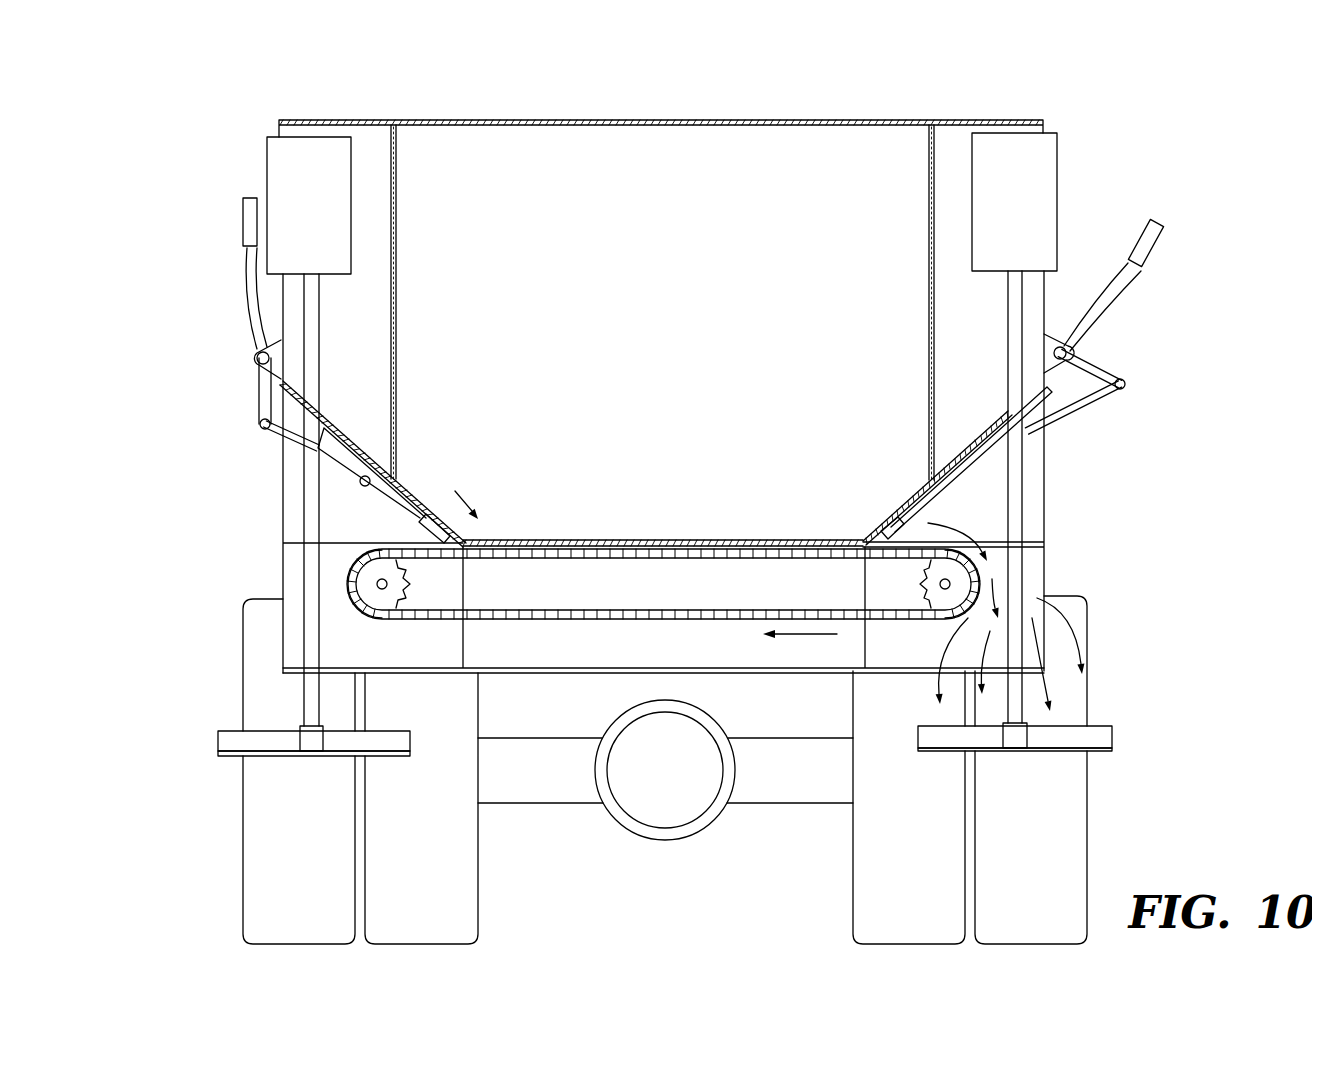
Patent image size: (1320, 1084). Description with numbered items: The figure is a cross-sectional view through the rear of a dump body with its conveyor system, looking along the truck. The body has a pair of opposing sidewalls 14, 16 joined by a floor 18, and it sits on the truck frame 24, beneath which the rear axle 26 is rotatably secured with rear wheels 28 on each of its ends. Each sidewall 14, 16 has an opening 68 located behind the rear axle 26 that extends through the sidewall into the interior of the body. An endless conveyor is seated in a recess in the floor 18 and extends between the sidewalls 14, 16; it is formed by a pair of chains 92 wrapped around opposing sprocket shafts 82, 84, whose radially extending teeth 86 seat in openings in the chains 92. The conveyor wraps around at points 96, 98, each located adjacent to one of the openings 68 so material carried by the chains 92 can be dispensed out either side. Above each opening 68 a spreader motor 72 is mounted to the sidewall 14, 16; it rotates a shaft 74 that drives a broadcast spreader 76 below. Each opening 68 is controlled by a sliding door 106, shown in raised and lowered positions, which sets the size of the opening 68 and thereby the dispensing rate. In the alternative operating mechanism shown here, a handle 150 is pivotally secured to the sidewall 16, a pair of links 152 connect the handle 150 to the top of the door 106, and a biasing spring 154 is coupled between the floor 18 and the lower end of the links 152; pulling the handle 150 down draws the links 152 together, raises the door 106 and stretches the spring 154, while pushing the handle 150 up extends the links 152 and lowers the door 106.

The sidewall 14 is at (396, 218).
The sidewall 16 is at (928, 186).
The floor 18 is at (690, 540).
The truck frame 24 is at (577, 653).
The rear axle 26 is at (547, 777).
The rear wheels 28 is at (665, 770).
The opening 68 is at (422, 488).
The spreader motor 72 is at (662, 203).
The shaft 74 is at (320, 325).
The broadcast spreader 76 is at (218, 752).
The sprocket shaft 82 is at (388, 585).
The sprocket shaft 84 is at (940, 583).
The teeth 86 is at (410, 598).
The chains 92 is at (395, 618).
The wrap around point 96 is at (348, 583).
The wrap around point 98 is at (985, 580).
The door 106 is at (422, 514).
The handle 150 is at (253, 309).
The links 152 is at (263, 389).
The biasing spring 154 is at (400, 501).